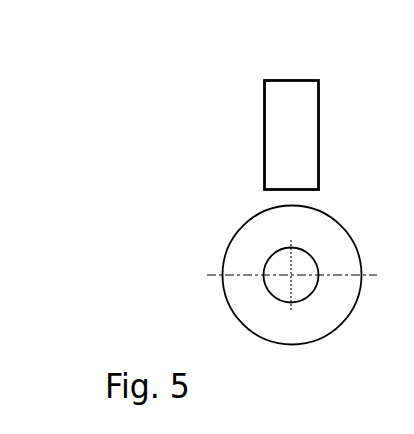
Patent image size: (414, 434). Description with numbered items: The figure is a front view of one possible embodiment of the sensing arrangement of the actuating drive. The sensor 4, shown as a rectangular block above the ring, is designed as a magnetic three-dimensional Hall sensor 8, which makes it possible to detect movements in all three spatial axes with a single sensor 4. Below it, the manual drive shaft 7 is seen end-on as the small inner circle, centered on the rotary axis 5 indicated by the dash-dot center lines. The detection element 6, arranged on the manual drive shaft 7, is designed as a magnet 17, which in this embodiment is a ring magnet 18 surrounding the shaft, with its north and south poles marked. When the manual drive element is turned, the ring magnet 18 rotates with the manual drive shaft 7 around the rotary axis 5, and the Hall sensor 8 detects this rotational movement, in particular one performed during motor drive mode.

The sensor 4 is at (239, 135).
The magnetic 3D Hall sensor 8 is at (273, 126).
The rotary axis 5 is at (199, 259).
The manual drive shaft 7 is at (288, 275).
The detection element 6 is at (203, 275).
The magnet 17 is at (203, 275).
The ring magnet 18 is at (240, 293).